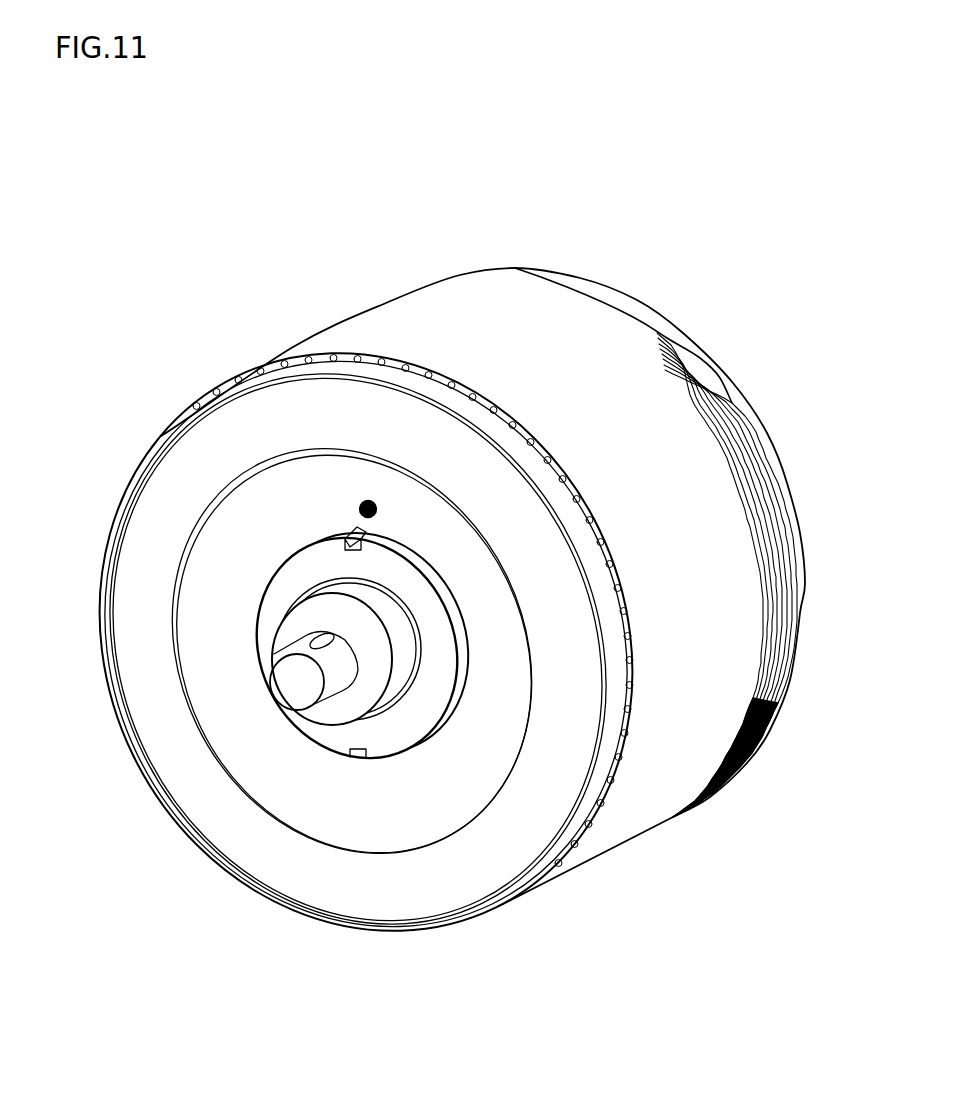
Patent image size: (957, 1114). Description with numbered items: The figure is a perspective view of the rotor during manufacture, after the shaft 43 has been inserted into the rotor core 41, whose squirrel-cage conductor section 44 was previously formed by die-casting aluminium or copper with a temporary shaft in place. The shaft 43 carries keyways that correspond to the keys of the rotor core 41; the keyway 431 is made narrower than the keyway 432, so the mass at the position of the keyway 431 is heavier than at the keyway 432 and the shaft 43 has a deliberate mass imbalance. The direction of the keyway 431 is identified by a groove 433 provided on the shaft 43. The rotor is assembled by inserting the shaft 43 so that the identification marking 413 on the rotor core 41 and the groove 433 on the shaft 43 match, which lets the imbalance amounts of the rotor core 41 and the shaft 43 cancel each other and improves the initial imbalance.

The rotor core 41 is at (607, 357).
The conductor section 44 is at (150, 513).
The shaft 43 is at (309, 666).
The keyway 431 is at (350, 543).
The keyway 432 is at (355, 758).
The groove 433 is at (300, 647).
The identification marking 413 is at (366, 501).